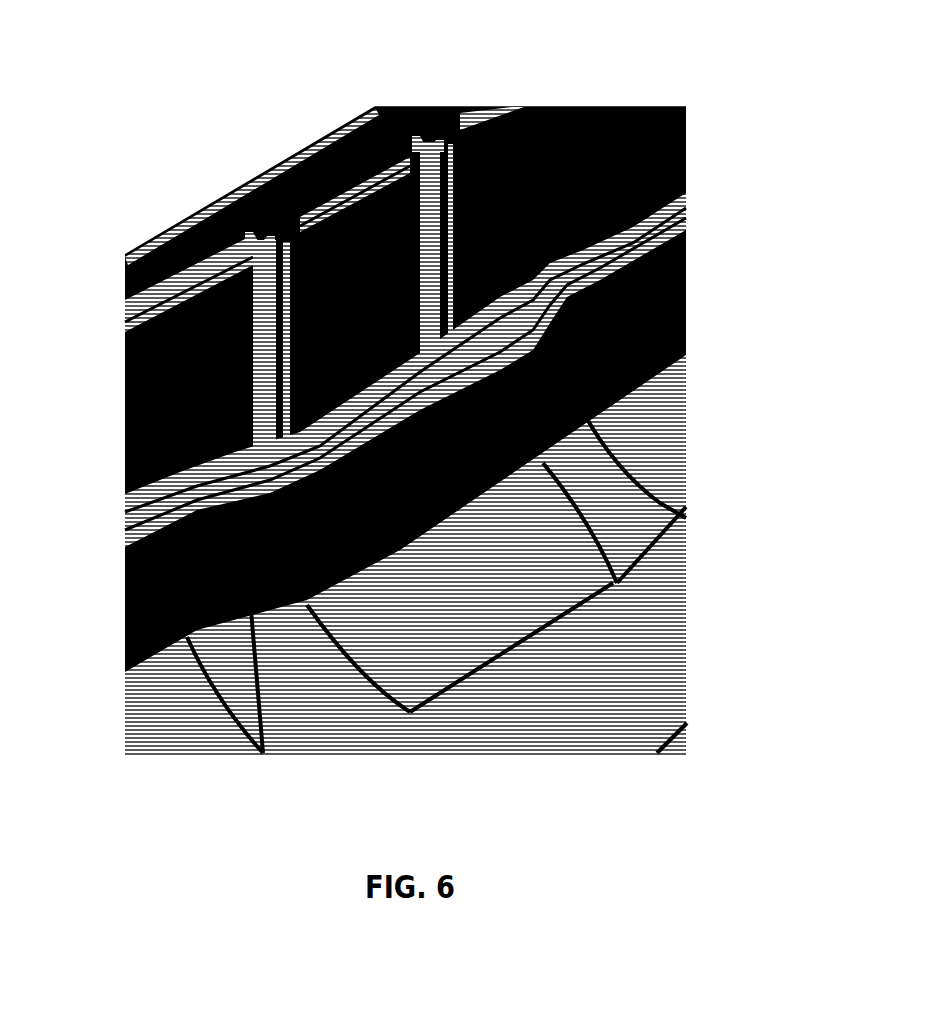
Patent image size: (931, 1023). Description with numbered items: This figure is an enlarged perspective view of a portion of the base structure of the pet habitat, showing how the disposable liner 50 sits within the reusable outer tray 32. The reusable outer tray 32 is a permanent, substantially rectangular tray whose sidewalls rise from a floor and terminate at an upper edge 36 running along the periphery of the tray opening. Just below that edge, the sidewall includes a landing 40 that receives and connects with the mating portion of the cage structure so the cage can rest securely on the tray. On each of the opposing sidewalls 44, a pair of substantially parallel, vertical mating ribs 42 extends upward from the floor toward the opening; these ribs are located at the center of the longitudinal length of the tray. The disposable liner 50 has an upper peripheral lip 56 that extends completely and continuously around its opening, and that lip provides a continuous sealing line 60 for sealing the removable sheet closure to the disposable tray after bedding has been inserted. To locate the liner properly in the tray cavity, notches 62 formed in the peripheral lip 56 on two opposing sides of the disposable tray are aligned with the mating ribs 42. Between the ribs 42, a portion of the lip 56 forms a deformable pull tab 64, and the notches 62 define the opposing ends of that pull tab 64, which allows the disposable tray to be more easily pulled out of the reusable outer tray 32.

The reusable outer tray 32 is at (566, 95).
The upper edge 36 is at (143, 247).
The landing 40 is at (143, 283).
The mating ribs 42 is at (443, 133).
The opposing sidewalls 44 is at (650, 107).
The disposable liner 50 is at (648, 408).
The upper peripheral lip 56 is at (150, 449).
The sealing line 60 is at (125, 500).
The notches 62 is at (140, 384).
The deformable pull tabs 64 is at (310, 218).